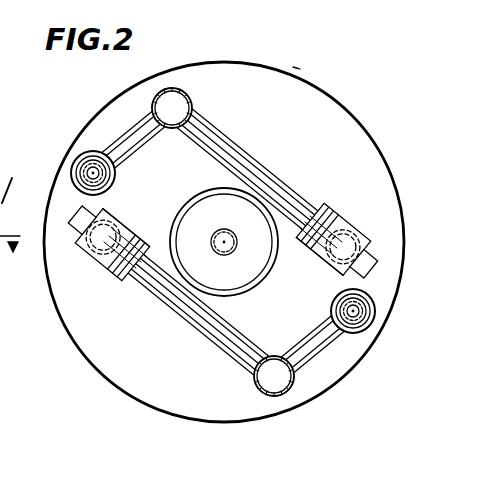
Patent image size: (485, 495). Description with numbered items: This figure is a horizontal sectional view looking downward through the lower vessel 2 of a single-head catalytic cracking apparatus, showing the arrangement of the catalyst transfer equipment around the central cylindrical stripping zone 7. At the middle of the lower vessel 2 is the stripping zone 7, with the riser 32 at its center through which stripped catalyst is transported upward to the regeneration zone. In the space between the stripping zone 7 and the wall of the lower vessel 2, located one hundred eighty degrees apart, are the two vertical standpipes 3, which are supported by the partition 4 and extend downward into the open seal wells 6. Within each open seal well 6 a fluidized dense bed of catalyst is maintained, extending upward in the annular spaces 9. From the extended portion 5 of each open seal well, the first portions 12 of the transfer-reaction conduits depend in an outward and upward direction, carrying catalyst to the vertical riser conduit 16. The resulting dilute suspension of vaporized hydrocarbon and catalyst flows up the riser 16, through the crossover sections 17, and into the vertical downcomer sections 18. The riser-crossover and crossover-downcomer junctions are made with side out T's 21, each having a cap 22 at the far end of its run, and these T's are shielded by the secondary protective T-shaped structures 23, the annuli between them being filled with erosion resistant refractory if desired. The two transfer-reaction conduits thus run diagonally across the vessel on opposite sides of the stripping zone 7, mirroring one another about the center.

The lower vessel 2 is at (241, 57).
The vertical standpipes 3 is at (101, 178).
The partition 4 is at (292, 67).
The extended portion of the open seal well 5 is at (98, 154).
The open seal wells 6 is at (108, 170).
The central cylindrical stripping zone 7 is at (267, 273).
The annular spaces 9 is at (84, 161).
The first portions of the transfer-reaction conduits 12 is at (125, 140).
The riser conduit 16 is at (172, 88).
The crossover sections 17 is at (243, 155).
The vertical downcomer sections 18 is at (345, 225).
The side out T's 21 is at (360, 236).
The caps 22 is at (361, 268).
The secondary protective T-shaped structures 23 is at (340, 266).
The riser 32 is at (224, 229).